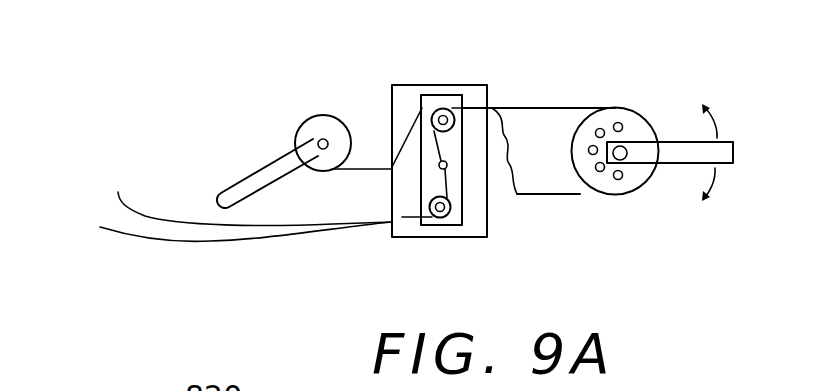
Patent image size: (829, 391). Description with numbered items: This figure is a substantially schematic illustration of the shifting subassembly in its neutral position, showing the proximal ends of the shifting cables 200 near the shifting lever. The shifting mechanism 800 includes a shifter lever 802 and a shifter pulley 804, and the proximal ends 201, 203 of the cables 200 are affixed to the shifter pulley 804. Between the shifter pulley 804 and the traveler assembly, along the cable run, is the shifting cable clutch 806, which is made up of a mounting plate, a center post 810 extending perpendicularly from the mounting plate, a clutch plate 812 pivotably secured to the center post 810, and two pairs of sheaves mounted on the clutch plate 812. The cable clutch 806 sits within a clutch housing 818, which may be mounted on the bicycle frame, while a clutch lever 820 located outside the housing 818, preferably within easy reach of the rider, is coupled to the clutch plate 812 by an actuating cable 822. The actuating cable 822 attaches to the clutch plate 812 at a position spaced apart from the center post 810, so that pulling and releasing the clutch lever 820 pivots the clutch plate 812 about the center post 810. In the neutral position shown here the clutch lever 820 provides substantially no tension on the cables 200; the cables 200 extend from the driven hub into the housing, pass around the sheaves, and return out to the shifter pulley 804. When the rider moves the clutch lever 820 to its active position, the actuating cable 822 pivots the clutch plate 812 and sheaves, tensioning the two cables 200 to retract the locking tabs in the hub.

The cables 200 is at (302, 249).
The proximal end of cable 201 is at (550, 107).
The proximal end of cable 203 is at (588, 196).
The shifting mechanism 800 is at (448, 66).
The shifter lever 802 is at (678, 140).
The shifter pulley 804 is at (632, 180).
The shifting cable clutch 806 is at (388, 64).
The center post 810 is at (443, 165).
The clutch plate 812 is at (462, 190).
The clutch housing 818 is at (430, 239).
The clutch lever 820 is at (259, 171).
The actuating cable 822 is at (305, 110).